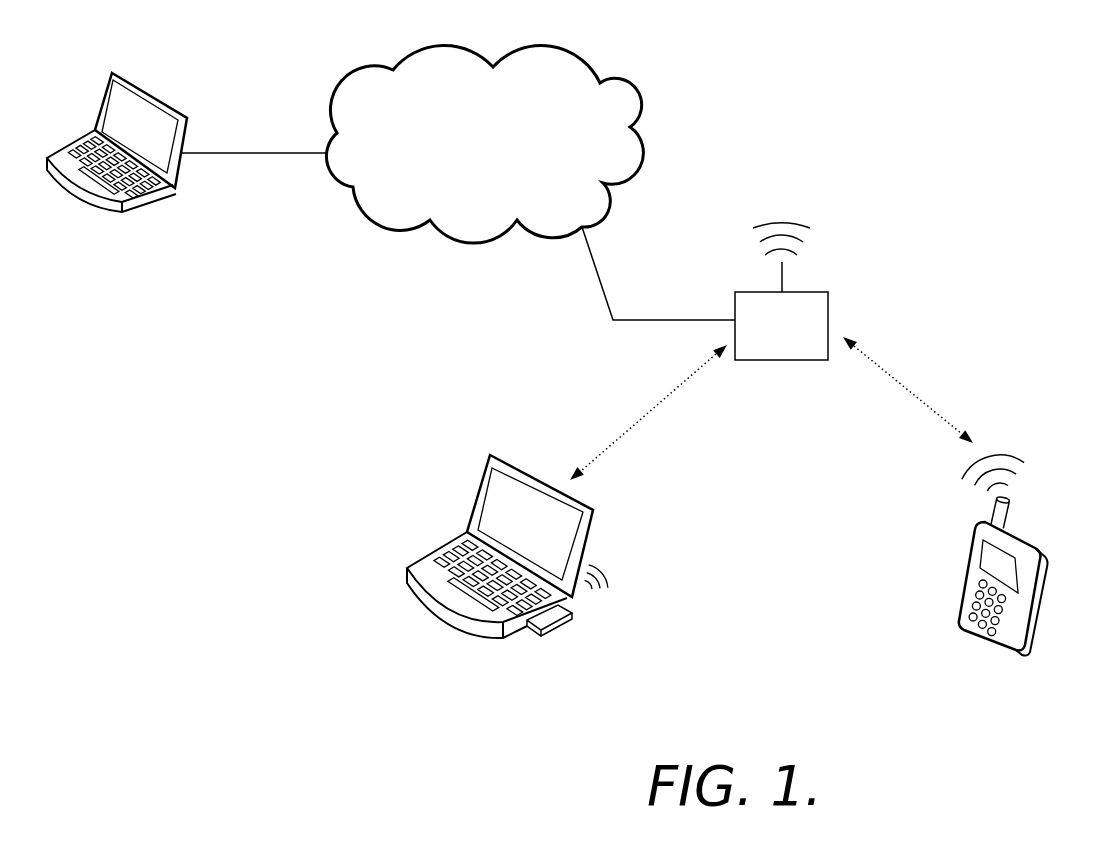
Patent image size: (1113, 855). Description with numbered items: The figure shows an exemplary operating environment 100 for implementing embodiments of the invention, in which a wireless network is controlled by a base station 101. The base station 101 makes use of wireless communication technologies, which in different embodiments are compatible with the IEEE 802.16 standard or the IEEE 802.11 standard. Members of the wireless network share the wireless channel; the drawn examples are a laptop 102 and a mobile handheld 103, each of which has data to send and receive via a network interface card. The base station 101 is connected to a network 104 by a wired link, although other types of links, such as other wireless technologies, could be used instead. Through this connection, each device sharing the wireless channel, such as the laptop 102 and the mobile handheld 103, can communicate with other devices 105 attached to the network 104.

The environment 100 is at (1000, 80).
The base station 101 is at (819, 292).
The laptop 102 is at (437, 550).
The mobile handheld 103 is at (1045, 552).
The network 104 is at (544, 47).
The other devices 105 is at (162, 93).